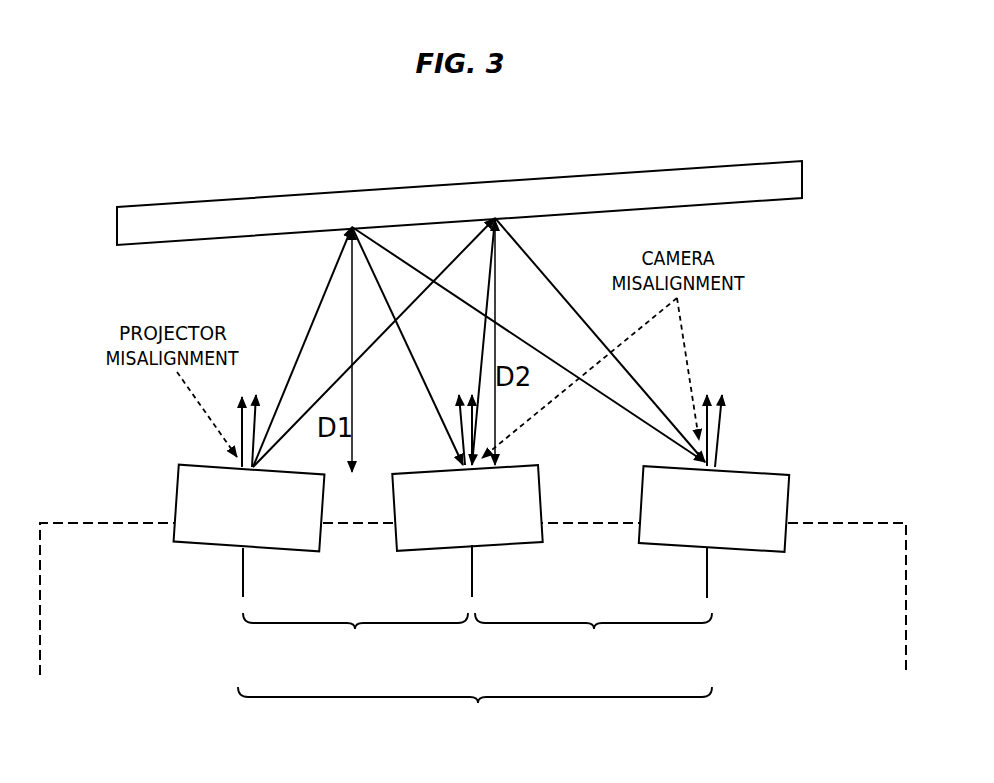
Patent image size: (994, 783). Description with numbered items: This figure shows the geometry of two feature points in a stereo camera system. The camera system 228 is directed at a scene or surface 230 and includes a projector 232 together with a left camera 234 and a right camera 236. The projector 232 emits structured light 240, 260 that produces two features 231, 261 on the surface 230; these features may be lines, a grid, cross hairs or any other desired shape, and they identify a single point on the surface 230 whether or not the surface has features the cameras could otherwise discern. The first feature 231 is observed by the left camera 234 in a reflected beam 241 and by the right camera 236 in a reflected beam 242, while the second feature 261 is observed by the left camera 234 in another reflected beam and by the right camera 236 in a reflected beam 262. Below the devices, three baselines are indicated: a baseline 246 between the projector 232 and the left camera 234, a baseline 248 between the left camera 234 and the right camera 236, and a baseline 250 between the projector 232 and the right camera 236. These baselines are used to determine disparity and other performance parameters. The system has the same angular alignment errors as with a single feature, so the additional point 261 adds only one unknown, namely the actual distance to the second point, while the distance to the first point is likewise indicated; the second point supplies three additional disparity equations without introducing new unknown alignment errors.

The camera system 228 is at (73, 523).
The surface 230 is at (802, 173).
The feature 231 is at (351, 220).
The projector 232 is at (190, 543).
The left camera 234 is at (422, 550).
The right camera 236 is at (790, 483).
The beam of light 240 is at (322, 292).
The reflected beam 241 is at (432, 402).
The reflected beam 242 is at (622, 408).
The baseline 246 is at (282, 648).
The baseline 248 is at (665, 648).
The baseline 250 is at (570, 728).
The structured light 260 is at (453, 253).
The feature 261 is at (480, 343).
The reflected beam 262 is at (533, 258).